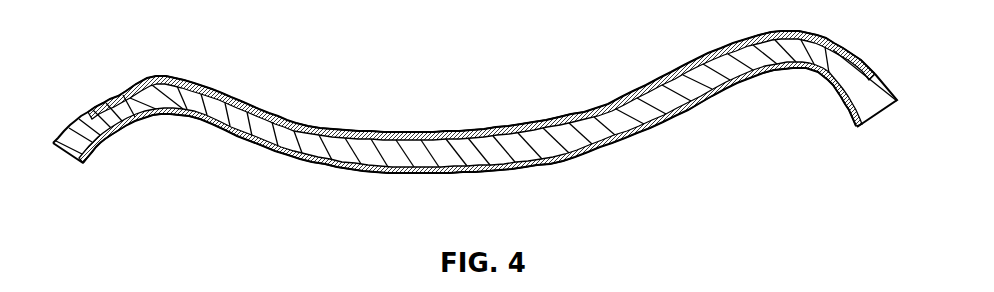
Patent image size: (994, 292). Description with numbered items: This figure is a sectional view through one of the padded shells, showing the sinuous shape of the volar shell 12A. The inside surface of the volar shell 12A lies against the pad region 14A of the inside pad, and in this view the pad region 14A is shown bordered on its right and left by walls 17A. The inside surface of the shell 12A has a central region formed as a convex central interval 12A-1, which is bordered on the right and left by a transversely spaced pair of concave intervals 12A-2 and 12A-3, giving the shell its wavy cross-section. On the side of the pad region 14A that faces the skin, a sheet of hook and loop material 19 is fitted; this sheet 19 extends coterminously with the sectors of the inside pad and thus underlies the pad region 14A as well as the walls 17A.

The volar shell 12A is at (612, 99).
The convex central interval 12A-1 is at (443, 143).
The concave interval 12A-2 is at (137, 118).
The concave interval 12A-3 is at (815, 50).
The pad region 14A is at (301, 119).
The sheet of hook and loop material 19 is at (257, 146).
The walls 17A is at (70, 125).